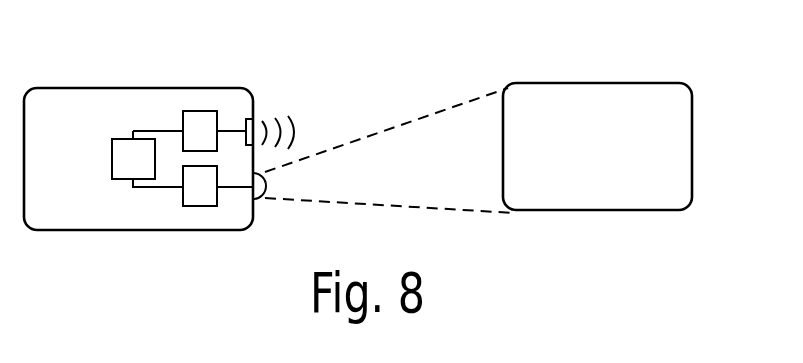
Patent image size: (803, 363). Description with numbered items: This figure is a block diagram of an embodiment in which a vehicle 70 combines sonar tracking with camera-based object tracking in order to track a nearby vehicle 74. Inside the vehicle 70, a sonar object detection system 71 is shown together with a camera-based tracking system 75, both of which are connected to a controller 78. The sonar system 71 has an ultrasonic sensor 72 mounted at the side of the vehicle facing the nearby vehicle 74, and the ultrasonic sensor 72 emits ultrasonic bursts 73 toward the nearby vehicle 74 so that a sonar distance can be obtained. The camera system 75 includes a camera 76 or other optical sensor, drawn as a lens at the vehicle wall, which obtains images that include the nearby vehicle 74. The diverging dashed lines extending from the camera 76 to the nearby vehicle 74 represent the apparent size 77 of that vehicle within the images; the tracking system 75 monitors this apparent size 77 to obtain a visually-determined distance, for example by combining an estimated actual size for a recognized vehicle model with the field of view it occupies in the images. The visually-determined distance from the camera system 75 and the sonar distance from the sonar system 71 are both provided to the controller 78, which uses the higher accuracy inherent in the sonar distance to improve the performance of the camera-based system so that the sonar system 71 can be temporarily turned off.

The vehicle 70 is at (114, 78).
The sonar object detection system 71 is at (199, 111).
The ultrasonic sensor 72 is at (247, 118).
The ultrasonic bursts 73 is at (283, 117).
The nearby vehicle 74 is at (610, 82).
The camera-based tracking system 75 is at (197, 207).
The camera 76 is at (247, 195).
The apparent size 77 is at (450, 104).
The controller 78 is at (111, 151).